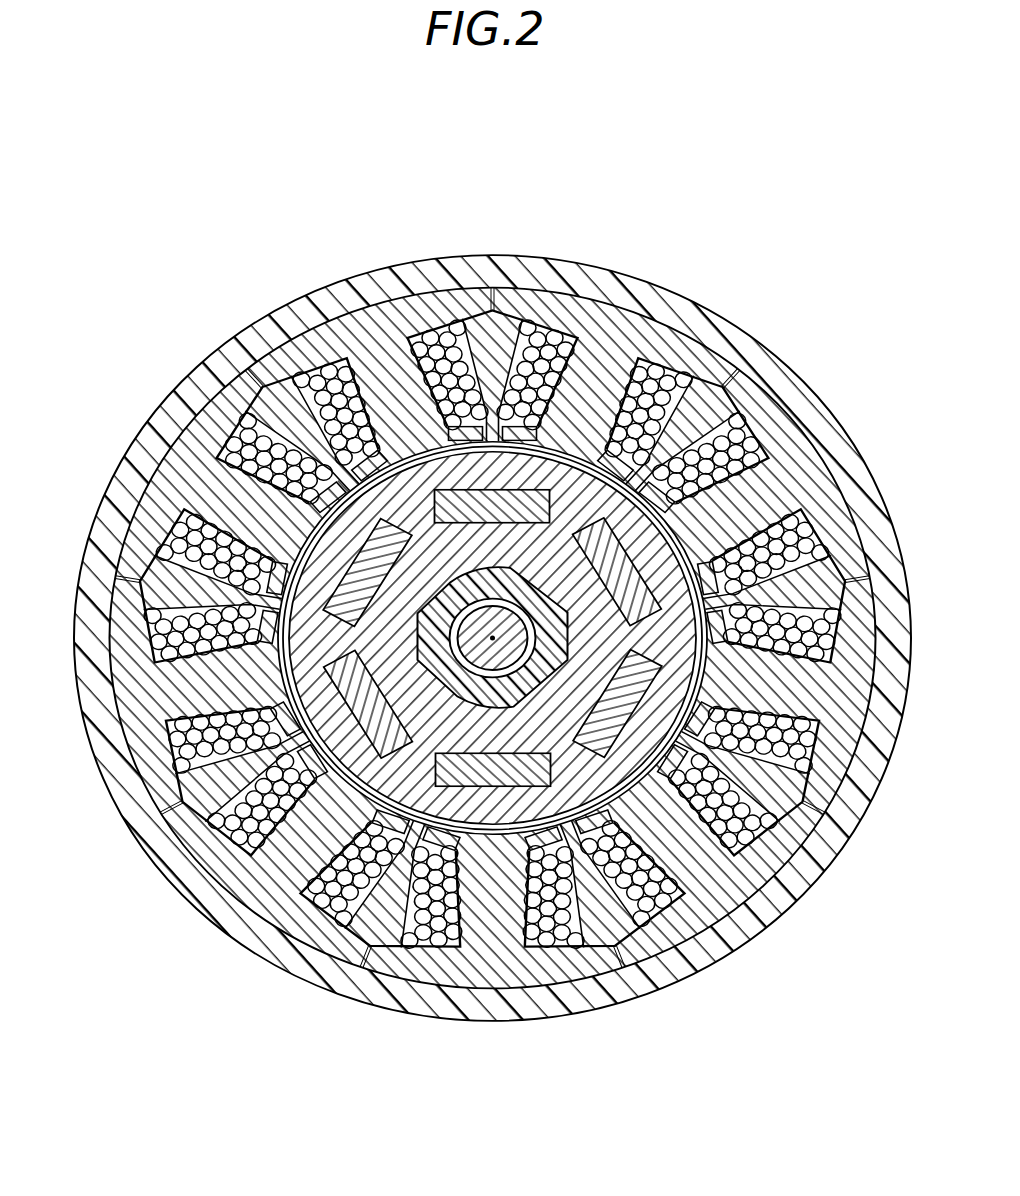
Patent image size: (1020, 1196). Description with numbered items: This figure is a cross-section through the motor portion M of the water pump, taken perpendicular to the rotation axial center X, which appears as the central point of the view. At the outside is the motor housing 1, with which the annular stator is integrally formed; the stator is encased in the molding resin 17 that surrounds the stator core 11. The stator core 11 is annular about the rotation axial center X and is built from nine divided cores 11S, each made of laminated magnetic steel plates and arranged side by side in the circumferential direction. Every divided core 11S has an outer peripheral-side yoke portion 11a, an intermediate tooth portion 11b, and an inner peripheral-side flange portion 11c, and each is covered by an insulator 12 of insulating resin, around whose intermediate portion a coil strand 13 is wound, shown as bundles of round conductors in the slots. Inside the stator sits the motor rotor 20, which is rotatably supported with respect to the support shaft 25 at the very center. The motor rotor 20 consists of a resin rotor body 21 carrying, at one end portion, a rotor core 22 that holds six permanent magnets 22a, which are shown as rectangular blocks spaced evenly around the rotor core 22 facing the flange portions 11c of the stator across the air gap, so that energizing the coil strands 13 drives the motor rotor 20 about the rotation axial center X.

The motor housing 1 is at (810, 390).
The motor portion M is at (480, 618).
The stator core 11 is at (128, 764).
The divided core 11S is at (308, 337).
The yoke portion 11a is at (150, 793).
The tooth portion 11b is at (195, 685).
The flange portion 11c is at (285, 612).
The insulator 12 is at (535, 330).
The coil strand 13 is at (652, 372).
The resin 17 is at (430, 262).
The motor rotor 20 is at (563, 452).
The rotor body 21 is at (457, 573).
The rotor core 22 is at (690, 672).
The permanent magnet 22a is at (487, 521).
The support shaft 25 is at (535, 638).
The rotation axial center X is at (491, 637).